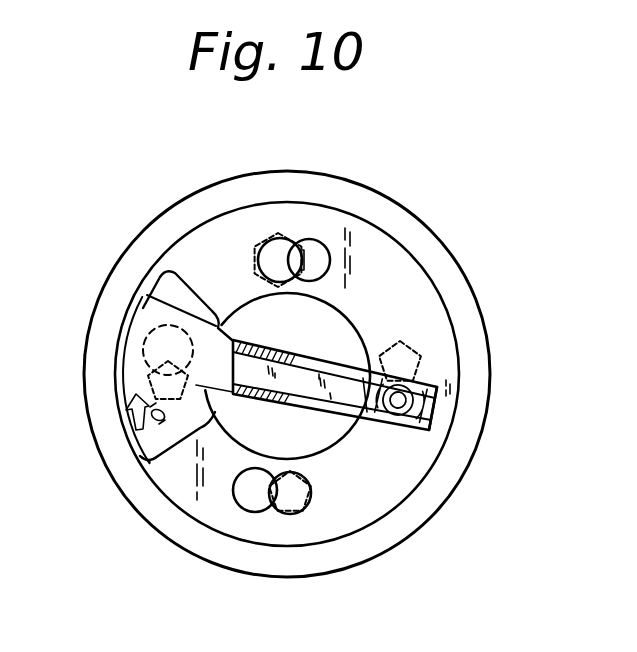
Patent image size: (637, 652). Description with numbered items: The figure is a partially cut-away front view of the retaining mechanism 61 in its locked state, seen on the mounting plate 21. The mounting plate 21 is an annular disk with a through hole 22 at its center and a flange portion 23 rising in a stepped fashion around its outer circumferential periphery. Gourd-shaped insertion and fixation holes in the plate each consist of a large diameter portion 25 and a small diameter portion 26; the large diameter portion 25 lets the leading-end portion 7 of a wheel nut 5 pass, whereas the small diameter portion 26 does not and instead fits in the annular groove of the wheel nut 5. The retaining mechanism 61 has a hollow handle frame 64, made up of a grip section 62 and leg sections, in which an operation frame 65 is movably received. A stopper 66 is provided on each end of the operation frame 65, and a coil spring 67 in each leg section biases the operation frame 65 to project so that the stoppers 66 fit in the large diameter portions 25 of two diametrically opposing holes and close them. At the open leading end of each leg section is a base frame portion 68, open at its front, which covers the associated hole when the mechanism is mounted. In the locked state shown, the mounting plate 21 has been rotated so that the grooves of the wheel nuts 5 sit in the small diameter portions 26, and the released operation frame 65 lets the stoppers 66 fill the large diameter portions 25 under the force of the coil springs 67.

The wheel nut 5 is at (263, 240).
The leading-end portion 7 is at (428, 364).
The mounting plate 21 is at (466, 272).
The through hole 22 is at (330, 445).
The flange portion 23 is at (478, 318).
The large diameter portion 25 is at (318, 248).
The small diameter portion 26 is at (292, 238).
The retaining mechanism 61 is at (318, 348).
The grip section 62 is at (130, 338).
The handle frame 64 is at (124, 317).
The operation frame 65 is at (358, 343).
The stopper 66 is at (432, 414).
The coil spring 67 is at (436, 413).
The base frame portion 68 is at (139, 458).